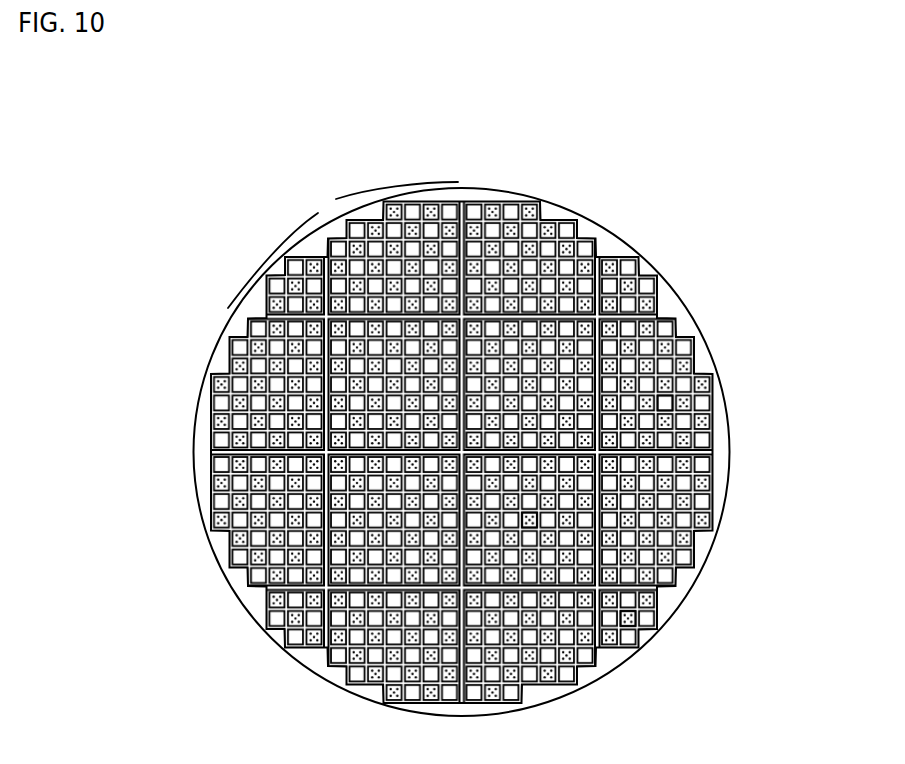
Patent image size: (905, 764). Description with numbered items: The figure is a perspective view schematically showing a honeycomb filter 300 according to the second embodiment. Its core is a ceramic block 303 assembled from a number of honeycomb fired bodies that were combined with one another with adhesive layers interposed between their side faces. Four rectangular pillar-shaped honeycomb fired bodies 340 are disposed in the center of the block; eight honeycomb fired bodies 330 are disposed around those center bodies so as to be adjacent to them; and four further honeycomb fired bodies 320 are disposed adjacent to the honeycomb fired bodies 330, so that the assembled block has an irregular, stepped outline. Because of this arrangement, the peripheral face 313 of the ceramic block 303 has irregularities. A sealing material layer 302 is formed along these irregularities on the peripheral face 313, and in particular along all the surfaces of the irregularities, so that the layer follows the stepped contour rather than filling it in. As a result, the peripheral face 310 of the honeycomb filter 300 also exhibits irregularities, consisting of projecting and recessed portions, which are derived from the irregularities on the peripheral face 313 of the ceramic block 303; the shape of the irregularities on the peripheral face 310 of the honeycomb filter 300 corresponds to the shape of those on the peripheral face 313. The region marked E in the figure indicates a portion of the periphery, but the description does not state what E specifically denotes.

The honeycomb filter 300 is at (490, 412).
The sealing material layer 302 is at (541, 201).
The ceramic block 303 is at (191, 369).
The peripheral face of the honeycomb filter 310 is at (623, 235).
The peripheral face of the ceramic block 313 is at (677, 290).
The honeycomb fired bodies 320 is at (638, 625).
The honeycomb fired bodies 330 is at (662, 397).
The rectangular pillar-shaped honeycomb fired bodies 340 is at (533, 518).
The outer peripheral region E is at (343, 245).